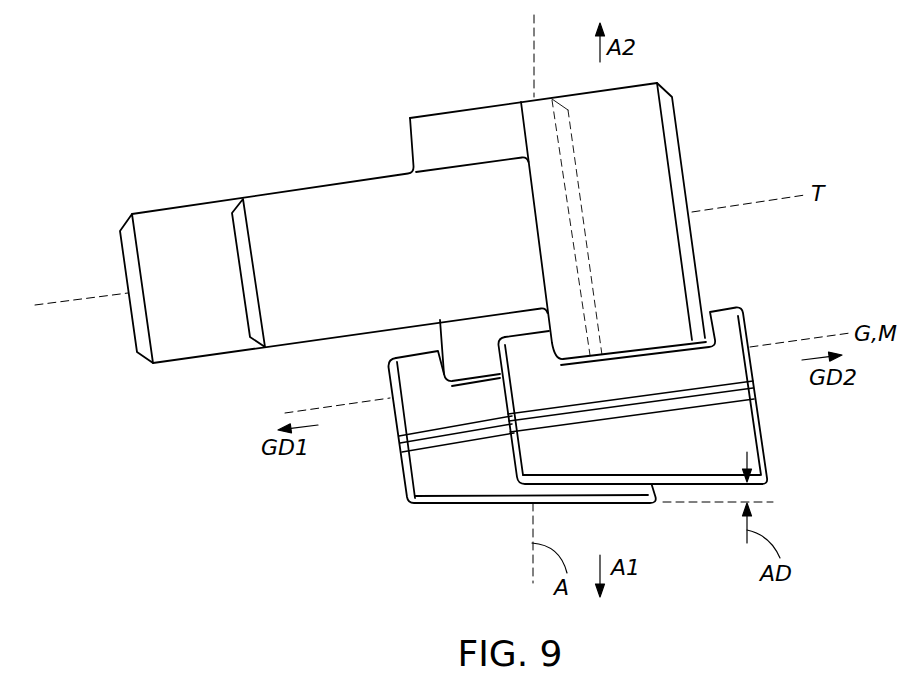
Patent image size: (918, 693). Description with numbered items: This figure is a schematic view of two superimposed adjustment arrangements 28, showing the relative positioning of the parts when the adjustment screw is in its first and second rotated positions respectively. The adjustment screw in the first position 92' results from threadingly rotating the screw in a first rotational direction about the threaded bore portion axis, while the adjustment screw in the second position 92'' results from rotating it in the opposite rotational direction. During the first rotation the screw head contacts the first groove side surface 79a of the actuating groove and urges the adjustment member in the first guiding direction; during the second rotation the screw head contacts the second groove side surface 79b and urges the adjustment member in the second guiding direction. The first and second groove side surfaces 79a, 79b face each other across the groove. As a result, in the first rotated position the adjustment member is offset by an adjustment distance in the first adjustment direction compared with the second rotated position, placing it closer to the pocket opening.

The adjustment arrangement 28 is at (720, 116).
The adjustment screw in the first position 92' is at (334, 226).
The adjustment screw in the second position 92'' is at (583, 221).
The first groove side surface 79a is at (553, 348).
The second groove side surface 79b is at (695, 342).